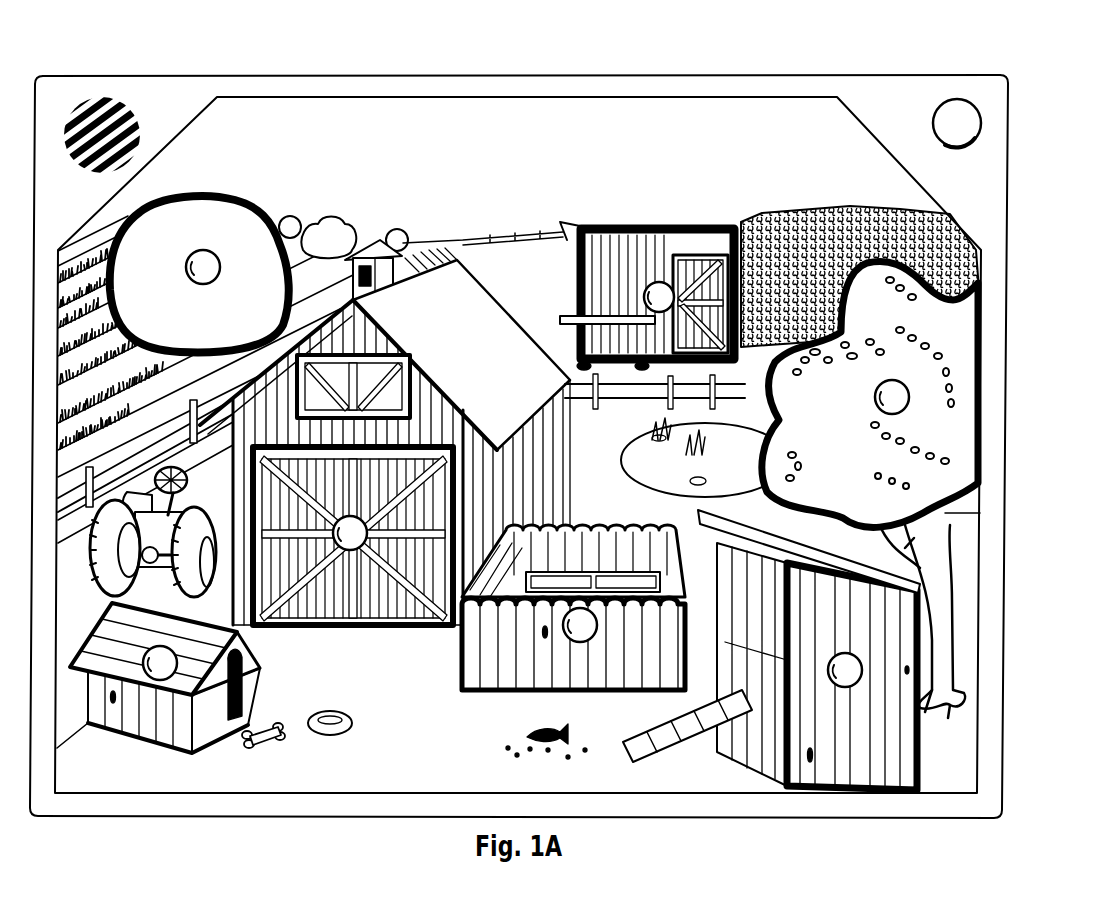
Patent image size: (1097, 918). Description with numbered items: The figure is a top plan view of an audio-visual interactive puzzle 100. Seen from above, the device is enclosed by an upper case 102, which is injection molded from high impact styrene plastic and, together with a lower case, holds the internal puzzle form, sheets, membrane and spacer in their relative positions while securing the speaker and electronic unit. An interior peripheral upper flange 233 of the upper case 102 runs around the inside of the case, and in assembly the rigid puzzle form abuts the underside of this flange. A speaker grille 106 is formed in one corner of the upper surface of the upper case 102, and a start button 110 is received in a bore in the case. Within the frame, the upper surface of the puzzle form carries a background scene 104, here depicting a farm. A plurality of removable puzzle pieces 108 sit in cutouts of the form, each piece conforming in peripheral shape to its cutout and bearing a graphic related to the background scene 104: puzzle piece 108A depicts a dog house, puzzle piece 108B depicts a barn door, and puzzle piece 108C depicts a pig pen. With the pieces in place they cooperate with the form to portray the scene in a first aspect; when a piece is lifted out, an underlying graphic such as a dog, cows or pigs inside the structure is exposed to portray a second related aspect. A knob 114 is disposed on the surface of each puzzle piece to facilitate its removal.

The audio-visual interactive puzzle 100 is at (1090, 323).
The upper case 102 is at (990, 598).
The background scene 104 is at (350, 765).
The speaker grille 106 is at (133, 110).
The puzzle pieces 108 is at (703, 222).
The puzzle piece 108A is at (257, 699).
The puzzle piece 108B is at (350, 623).
The puzzle piece 108C is at (548, 692).
The start button 110 is at (984, 122).
The knob 114 is at (222, 270).
The interior peripheral upper flange 233 is at (553, 85).